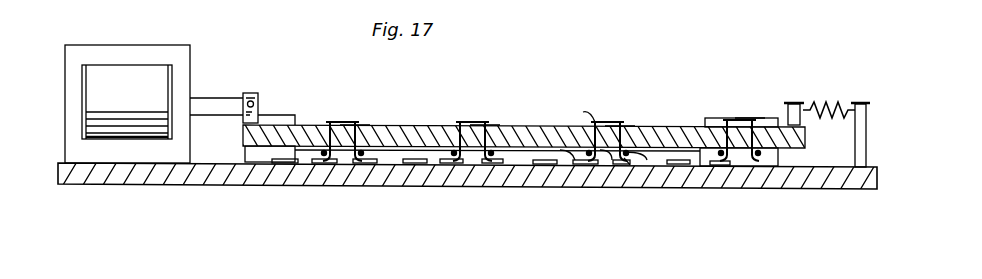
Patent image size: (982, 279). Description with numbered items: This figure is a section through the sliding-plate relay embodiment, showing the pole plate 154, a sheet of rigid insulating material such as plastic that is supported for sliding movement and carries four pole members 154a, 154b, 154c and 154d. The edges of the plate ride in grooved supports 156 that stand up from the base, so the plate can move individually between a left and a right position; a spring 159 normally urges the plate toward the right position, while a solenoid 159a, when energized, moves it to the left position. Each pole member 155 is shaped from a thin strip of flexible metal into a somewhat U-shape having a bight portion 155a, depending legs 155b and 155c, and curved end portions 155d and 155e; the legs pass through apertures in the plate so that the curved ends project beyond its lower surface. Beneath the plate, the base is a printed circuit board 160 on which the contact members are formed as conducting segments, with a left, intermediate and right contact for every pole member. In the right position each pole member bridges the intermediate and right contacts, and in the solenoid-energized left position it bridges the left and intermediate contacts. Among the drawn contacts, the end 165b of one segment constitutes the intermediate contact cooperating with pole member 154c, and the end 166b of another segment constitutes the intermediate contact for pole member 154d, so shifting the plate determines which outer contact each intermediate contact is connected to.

The pole plate 154 is at (656, 136).
The pole member 154a is at (750, 117).
The pole member 154b is at (619, 124).
The pole member 154c is at (484, 123).
The pole member 154d is at (352, 124).
The pole member 155 is at (342, 121).
The bight portion 155a is at (565, 109).
The depending leg 155b is at (606, 172).
The depending leg 155c is at (647, 160).
The curved end portion 155d is at (575, 170).
The curved end portion 155e is at (628, 156).
The grooved support 156 is at (282, 115).
The spring 159 is at (830, 104).
The solenoid 159a is at (178, 30).
The printed circuit board 160 is at (230, 177).
The end of conducting segment 165b is at (440, 170).
The end of conducting segment 166b is at (315, 165).